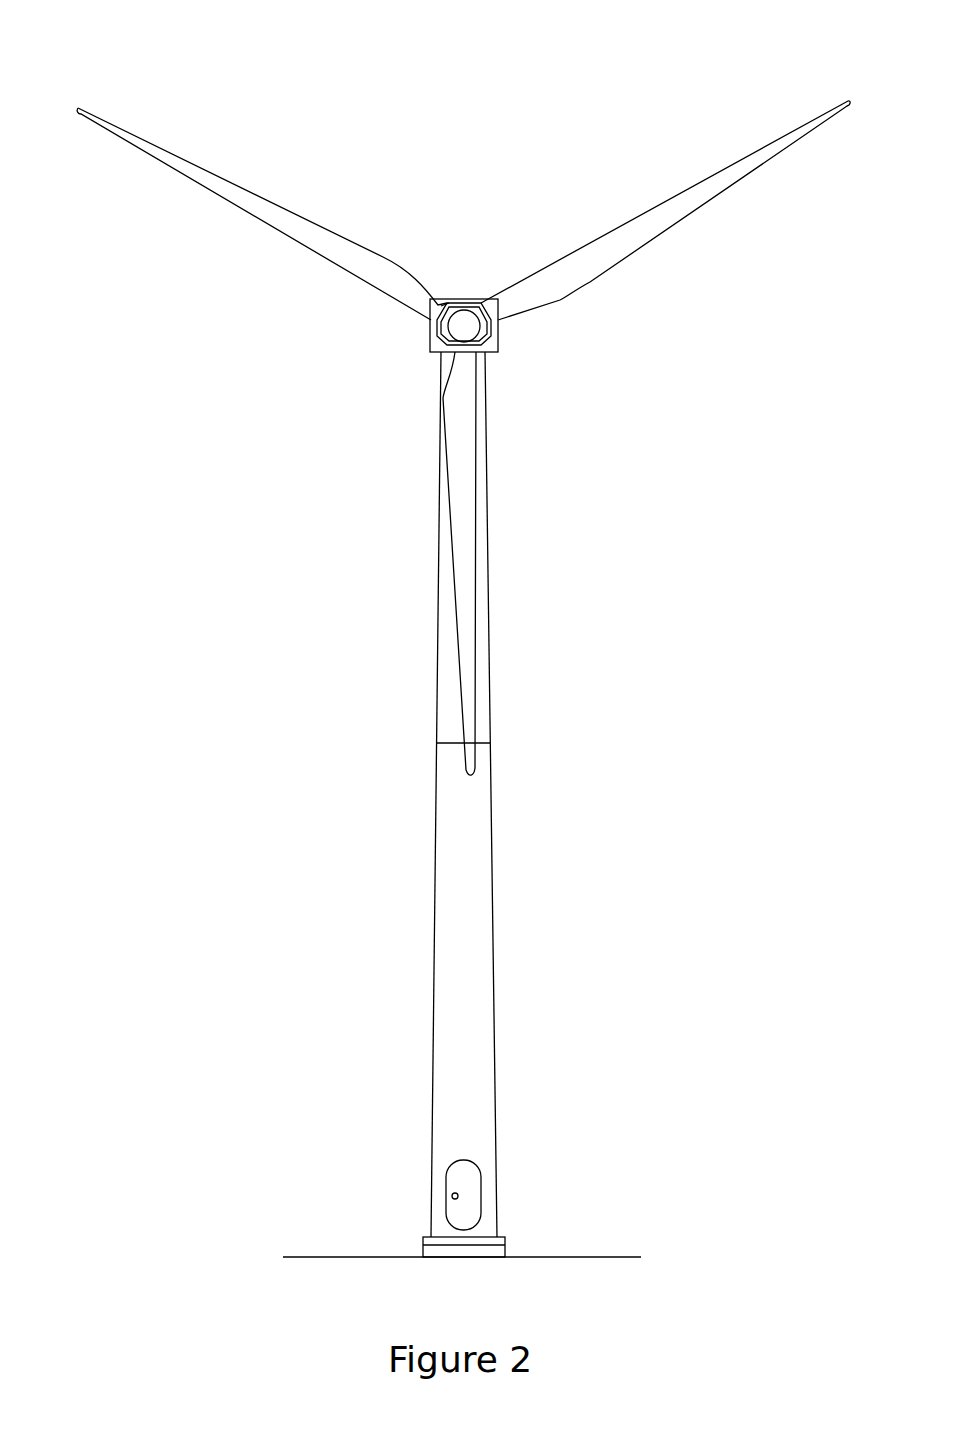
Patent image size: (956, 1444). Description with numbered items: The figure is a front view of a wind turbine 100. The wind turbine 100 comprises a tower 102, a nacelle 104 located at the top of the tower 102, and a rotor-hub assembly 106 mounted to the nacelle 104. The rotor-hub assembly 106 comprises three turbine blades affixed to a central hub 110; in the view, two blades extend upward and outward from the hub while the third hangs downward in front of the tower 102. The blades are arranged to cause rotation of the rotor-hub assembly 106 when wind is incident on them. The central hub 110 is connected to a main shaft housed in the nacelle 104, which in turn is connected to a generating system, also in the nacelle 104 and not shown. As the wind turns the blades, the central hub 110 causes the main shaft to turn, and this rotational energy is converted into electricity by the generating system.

The wind turbine 100 is at (82, 97).
The tower 102 is at (465, 937).
The nacelle 104 is at (488, 344).
The rotor-hub assembly 106 is at (460, 287).
The central hub 110 is at (470, 328).